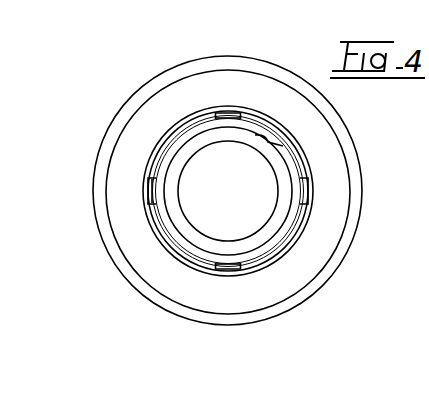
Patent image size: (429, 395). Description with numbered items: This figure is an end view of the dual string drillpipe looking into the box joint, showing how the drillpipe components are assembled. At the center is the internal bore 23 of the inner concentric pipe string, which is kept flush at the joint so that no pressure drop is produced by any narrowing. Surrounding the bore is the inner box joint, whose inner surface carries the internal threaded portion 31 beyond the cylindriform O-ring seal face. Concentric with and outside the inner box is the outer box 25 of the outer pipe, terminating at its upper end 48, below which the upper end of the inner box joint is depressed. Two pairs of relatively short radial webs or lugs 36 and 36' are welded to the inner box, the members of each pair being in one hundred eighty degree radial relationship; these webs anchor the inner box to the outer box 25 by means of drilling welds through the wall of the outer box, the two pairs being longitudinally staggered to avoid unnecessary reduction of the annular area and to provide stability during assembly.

The internal bore 23 is at (207, 168).
The outer box 25 is at (362, 183).
The internal threaded portion 31 is at (178, 162).
The radial webs or lugs 36 is at (262, 154).
The radial webs or lugs 36' is at (103, 188).
The upper end of the box joint on the outer pipe 48 is at (353, 235).